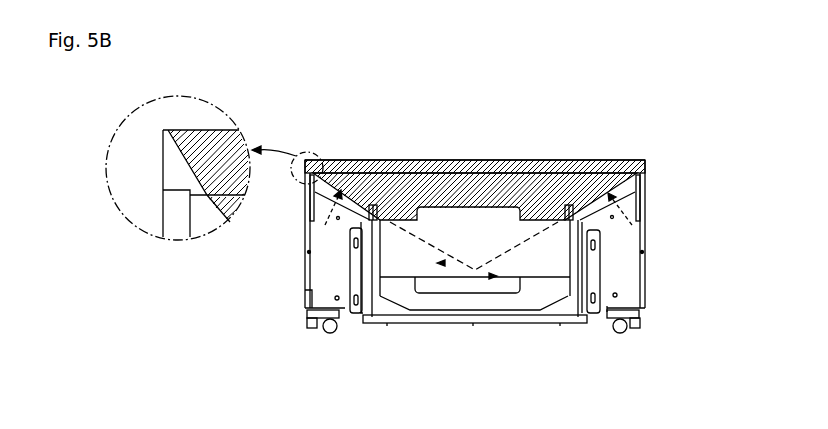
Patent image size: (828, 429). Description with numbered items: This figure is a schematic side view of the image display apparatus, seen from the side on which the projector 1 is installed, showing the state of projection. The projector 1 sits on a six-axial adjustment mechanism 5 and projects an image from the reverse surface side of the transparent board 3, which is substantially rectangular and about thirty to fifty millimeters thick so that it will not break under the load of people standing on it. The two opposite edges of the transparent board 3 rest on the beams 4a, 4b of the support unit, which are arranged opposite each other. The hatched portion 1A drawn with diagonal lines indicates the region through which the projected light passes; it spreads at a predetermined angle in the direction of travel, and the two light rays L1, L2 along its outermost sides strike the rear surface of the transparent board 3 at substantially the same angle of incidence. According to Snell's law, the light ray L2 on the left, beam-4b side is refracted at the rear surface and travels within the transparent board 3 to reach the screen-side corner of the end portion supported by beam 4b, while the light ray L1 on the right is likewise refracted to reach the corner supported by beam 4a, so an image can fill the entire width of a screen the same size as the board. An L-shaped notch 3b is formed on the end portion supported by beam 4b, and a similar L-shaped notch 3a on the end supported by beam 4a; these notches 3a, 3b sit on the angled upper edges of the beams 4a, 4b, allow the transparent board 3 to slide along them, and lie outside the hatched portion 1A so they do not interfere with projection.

The projector 1 is at (441, 283).
The hatched portion 1A is at (572, 160).
The transparent board 3 is at (647, 163).
The notch 3a is at (647, 172).
The notch 3b is at (182, 192).
The beam 4a is at (646, 195).
The beam 4b is at (302, 208).
The six-axial adjustment mechanism 5 is at (571, 306).
The light ray L1 is at (623, 220).
The light ray L2 is at (330, 219).